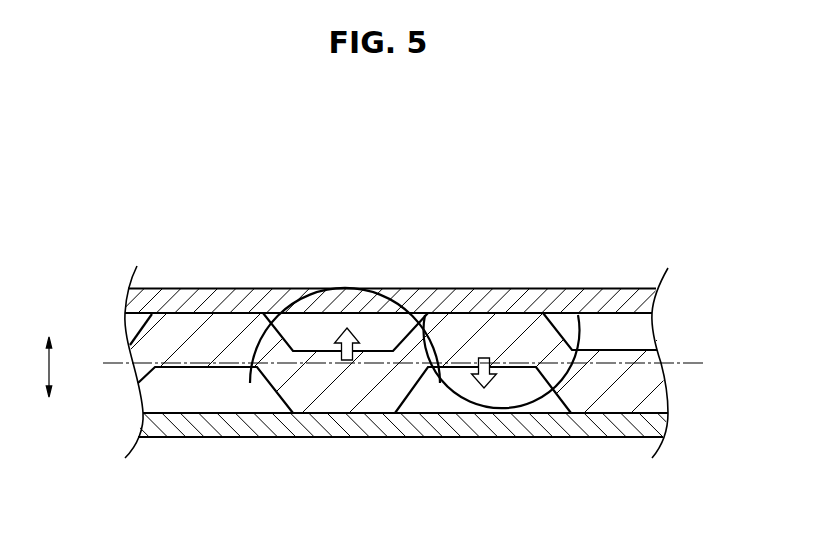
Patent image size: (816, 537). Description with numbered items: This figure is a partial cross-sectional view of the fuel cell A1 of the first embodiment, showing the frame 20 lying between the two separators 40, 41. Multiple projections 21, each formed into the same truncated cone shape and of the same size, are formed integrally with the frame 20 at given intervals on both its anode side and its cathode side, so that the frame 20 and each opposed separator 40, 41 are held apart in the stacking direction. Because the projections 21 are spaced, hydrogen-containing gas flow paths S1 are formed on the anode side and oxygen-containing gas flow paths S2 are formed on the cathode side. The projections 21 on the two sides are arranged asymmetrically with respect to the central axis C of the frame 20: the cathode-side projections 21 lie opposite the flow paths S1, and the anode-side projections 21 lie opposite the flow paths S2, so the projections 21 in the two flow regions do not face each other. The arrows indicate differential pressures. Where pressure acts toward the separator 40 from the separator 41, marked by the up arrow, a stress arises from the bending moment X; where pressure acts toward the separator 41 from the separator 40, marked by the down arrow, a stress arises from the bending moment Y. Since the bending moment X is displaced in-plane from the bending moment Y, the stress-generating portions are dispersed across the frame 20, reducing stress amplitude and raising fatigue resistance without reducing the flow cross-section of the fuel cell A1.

The fuel cell A1 is at (401, 328).
The frame 20 is at (411, 364).
The projections 21 is at (190, 322).
The separator 40 is at (250, 288).
The separator 41 is at (227, 431).
The hydrogen-containing gas flow paths S1 is at (333, 323).
The oxygen-containing gas flow paths S2 is at (178, 400).
The bending moment X is at (345, 282).
The bending moment Y is at (527, 407).
The central axis C is at (414, 363).